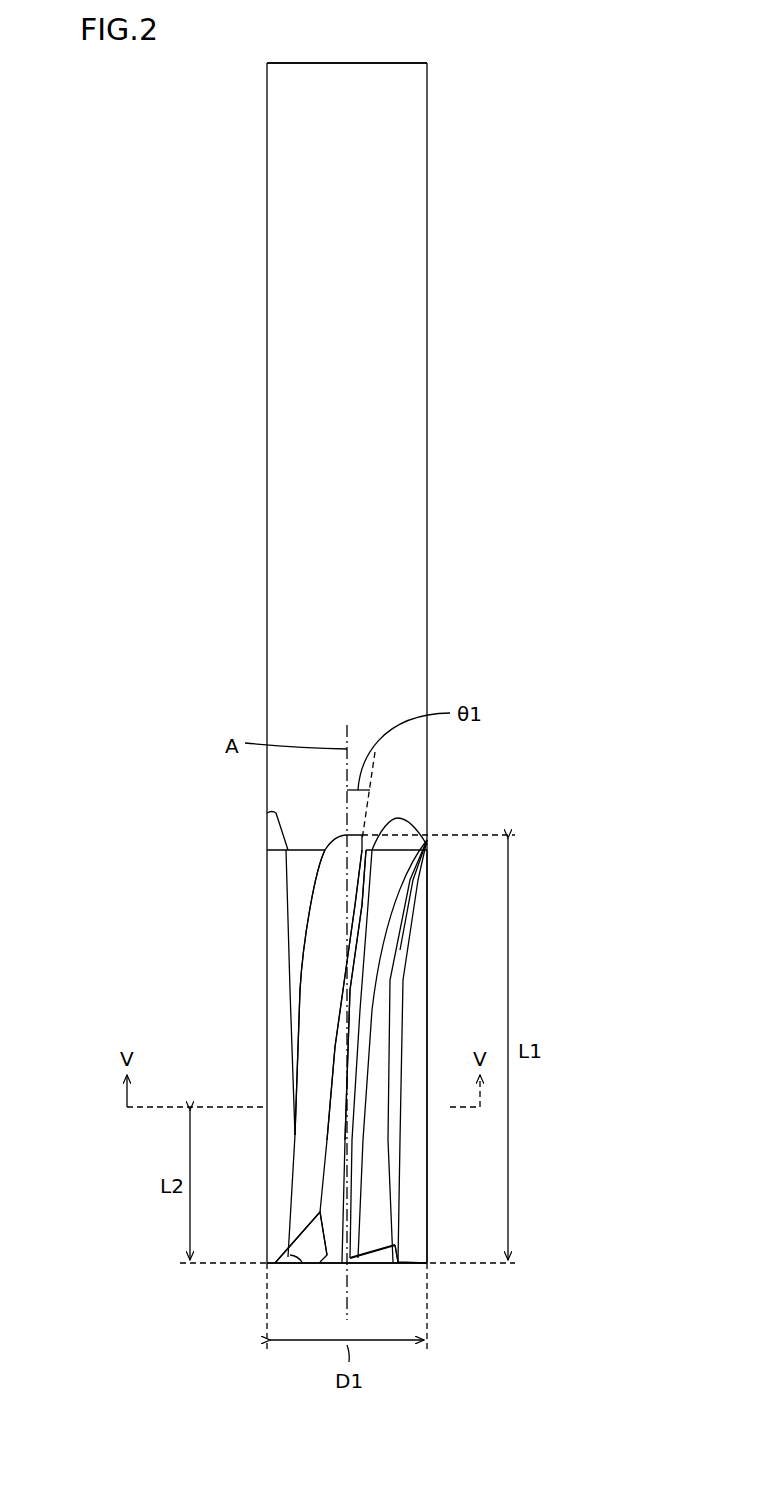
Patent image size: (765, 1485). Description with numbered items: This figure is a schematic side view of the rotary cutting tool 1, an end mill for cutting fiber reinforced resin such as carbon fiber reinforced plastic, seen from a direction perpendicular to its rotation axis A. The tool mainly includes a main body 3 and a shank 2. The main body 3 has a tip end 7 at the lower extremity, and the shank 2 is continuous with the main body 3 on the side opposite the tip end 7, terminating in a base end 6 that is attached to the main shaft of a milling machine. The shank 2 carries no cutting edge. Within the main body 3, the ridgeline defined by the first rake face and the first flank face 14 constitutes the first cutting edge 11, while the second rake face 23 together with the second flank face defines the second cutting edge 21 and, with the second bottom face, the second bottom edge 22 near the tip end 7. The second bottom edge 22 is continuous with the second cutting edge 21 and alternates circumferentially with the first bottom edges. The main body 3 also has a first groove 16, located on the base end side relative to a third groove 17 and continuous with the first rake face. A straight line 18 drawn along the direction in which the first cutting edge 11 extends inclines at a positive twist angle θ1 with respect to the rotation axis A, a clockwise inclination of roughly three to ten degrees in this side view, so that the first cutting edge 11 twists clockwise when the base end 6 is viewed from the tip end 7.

The rotary cutting tool 1 is at (377, 671).
The shank 2 is at (397, 661).
The main body 3 is at (280, 1208).
The base end 6 is at (393, 63).
The tip end 7 is at (428, 1265).
The first cutting edge 11 is at (340, 1138).
The first flank face 14 is at (328, 1168).
The first groove 16 is at (315, 1071).
The third groove 17 is at (315, 1268).
The straight line 18 is at (372, 775).
The second cutting edge 21 is at (427, 1160).
The second bottom edge 22 is at (405, 1268).
The second rake face 23 is at (410, 1240).